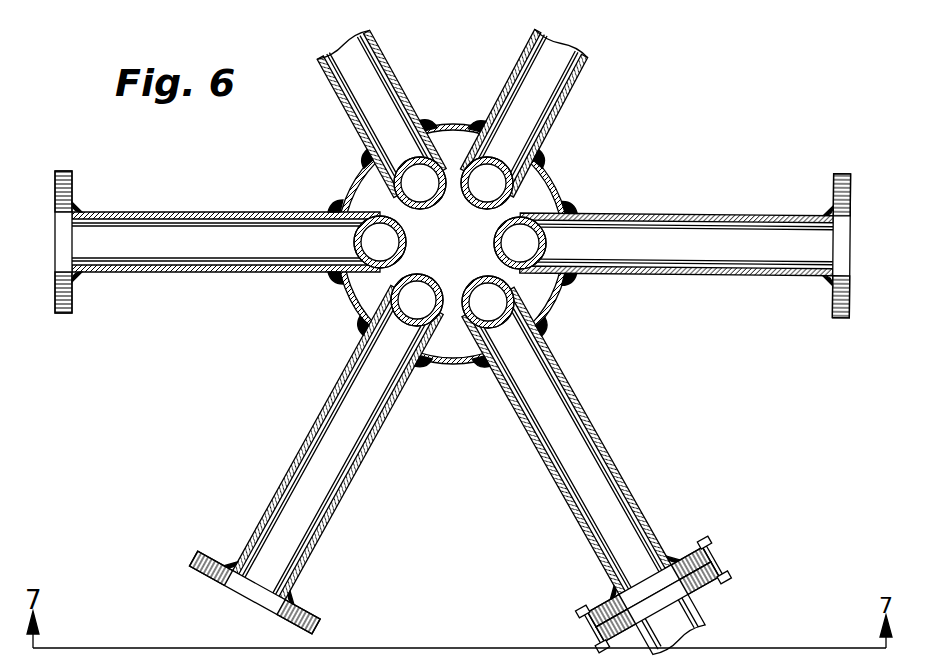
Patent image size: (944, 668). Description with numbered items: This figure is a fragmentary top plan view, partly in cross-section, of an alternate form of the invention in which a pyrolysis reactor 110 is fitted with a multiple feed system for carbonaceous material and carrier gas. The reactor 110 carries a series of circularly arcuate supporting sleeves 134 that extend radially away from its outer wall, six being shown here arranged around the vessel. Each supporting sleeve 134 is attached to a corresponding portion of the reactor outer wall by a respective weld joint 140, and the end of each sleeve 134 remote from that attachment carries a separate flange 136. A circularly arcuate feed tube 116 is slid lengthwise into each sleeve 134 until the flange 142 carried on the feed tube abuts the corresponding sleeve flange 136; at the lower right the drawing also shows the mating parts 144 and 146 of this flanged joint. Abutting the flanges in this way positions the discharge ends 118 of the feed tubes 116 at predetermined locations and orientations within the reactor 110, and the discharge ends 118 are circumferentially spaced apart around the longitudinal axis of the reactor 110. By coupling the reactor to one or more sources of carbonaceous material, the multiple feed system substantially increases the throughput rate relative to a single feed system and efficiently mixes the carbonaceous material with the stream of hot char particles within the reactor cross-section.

The pyrolysis reactor 110 is at (558, 298).
The feed tube 116 is at (205, 243).
The discharge end 118 is at (415, 292).
The supporting sleeve 134 is at (353, 140).
The flange 136 is at (62, 243).
The weld joint 140 is at (363, 322).
The flange 142 is at (590, 643).
The mating flange 144 is at (690, 550).
The flange bolts 146 is at (700, 567).